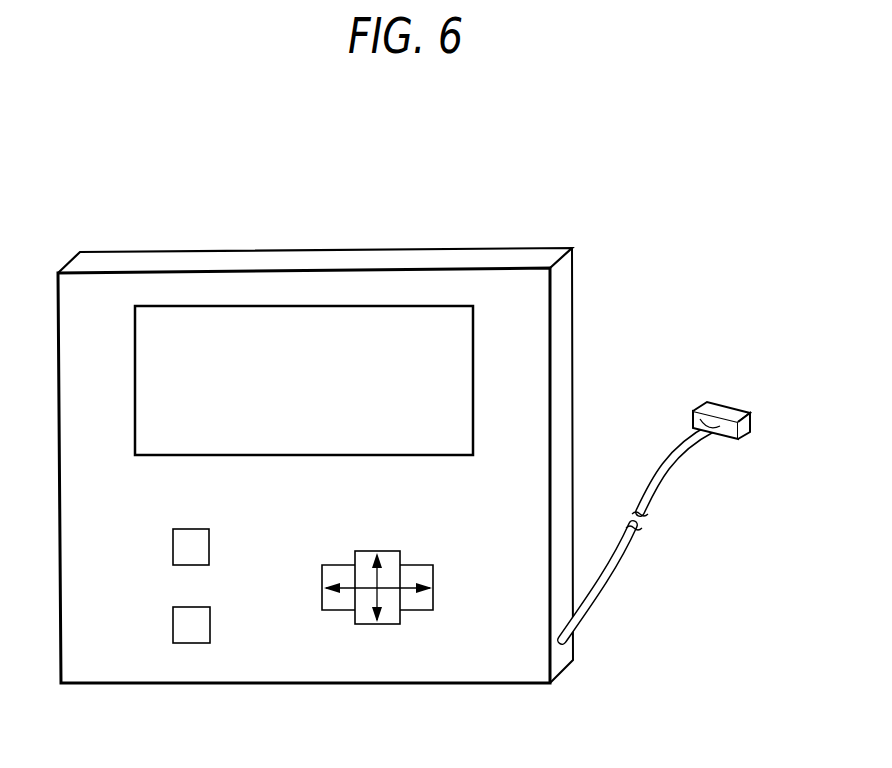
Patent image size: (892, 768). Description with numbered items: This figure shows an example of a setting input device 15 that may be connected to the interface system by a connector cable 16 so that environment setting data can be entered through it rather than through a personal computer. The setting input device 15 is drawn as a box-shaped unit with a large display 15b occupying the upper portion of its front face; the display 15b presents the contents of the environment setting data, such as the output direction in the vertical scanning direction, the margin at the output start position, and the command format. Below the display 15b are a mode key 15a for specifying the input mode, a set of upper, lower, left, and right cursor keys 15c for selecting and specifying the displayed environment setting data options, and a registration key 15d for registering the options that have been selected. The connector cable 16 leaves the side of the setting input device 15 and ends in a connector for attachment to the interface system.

The setting input device 15 is at (626, 255).
The mode key 15a is at (172, 557).
The display 15b is at (452, 356).
The upper, lower, left, and right cursor keys 15c is at (413, 611).
The registration key 15d is at (192, 643).
The connector cable 16 is at (698, 440).